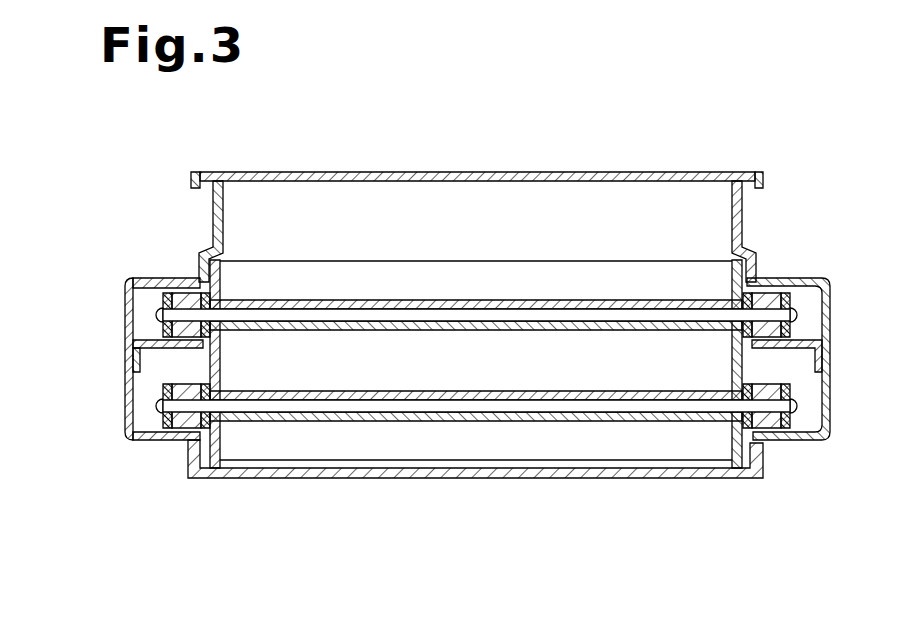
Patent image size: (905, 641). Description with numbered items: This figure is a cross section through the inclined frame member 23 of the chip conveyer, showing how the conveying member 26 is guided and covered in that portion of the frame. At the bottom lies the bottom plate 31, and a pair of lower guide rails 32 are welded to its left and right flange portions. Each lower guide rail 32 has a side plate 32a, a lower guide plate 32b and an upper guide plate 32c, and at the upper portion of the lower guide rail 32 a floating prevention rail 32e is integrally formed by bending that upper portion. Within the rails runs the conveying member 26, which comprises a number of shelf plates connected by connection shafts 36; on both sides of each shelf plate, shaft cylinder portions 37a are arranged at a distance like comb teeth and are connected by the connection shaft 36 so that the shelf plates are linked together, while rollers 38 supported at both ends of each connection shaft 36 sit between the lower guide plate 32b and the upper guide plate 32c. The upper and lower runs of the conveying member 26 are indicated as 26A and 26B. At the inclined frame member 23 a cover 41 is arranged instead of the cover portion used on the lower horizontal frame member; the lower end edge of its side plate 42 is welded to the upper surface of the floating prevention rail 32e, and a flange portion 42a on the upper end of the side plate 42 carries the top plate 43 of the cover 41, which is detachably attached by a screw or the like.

The inclined frame member 23 is at (475, 406).
The conveying member 26 is at (476, 335).
The upper electrode group 26A is at (476, 335).
The lower electrode group 26B is at (598, 386).
The bottom plate 31 is at (311, 479).
The lower guide rail 32 is at (435, 367).
The side plate 32a is at (125, 356).
The lower guide plate 32b is at (183, 442).
The upper guide plate 32c is at (193, 346).
The floating prevention rail 32e is at (172, 278).
The connection shaft 36 is at (322, 245).
The shaft cylinder portion 37a is at (408, 332).
The roller 38 is at (190, 348).
The cover 41 is at (316, 167).
The side plate 42 is at (223, 218).
The flange portion 42a is at (198, 191).
The top plate 43 is at (436, 190).